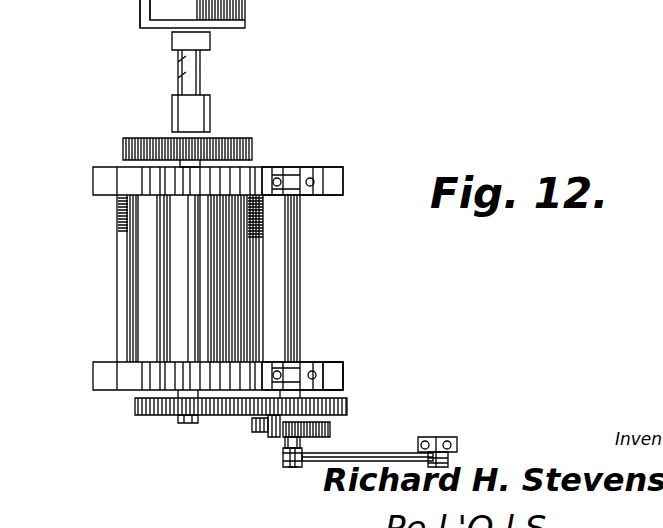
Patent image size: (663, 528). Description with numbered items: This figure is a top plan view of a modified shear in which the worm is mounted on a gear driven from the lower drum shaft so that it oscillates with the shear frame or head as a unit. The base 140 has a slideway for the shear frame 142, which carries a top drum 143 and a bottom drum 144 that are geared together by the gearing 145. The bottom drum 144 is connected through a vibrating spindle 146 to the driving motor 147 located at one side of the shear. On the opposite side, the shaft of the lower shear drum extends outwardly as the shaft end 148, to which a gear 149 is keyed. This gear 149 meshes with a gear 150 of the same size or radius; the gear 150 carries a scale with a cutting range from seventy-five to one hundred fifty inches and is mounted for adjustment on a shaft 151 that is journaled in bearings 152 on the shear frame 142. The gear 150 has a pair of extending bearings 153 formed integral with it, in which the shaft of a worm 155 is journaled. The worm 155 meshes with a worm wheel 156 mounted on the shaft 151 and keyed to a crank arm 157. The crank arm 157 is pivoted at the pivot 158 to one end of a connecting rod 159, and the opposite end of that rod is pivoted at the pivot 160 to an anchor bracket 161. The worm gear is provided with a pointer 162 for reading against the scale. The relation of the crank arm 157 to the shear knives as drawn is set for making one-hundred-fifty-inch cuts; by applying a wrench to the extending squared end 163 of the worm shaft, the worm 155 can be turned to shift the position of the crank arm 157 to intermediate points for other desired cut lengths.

The base 140 is at (122, 14).
The shear frame 142 is at (120, 375).
The top drum 143 is at (167, 232).
The bottom drum 144 is at (148, 287).
The gearing 145 is at (217, 138).
The vibrating spindle 146 is at (200, 83).
The driving motor 147 is at (141, 24).
The extending shaft end 148 is at (180, 423).
The gear 149 is at (135, 408).
The gear 150 is at (342, 396).
The shaft 151 is at (298, 294).
The bearings 152 is at (305, 358).
The extending bearings 153 is at (284, 443).
The worm 155 is at (258, 427).
The worm wheel 156 is at (330, 429).
The crank arm 157 is at (287, 464).
The pivot 158 is at (292, 468).
The connecting rod 159 is at (368, 450).
The pivot 160 is at (460, 463).
The anchor bracket 161 is at (457, 439).
The pointer 162 is at (307, 166).
The squared end 163 is at (255, 433).